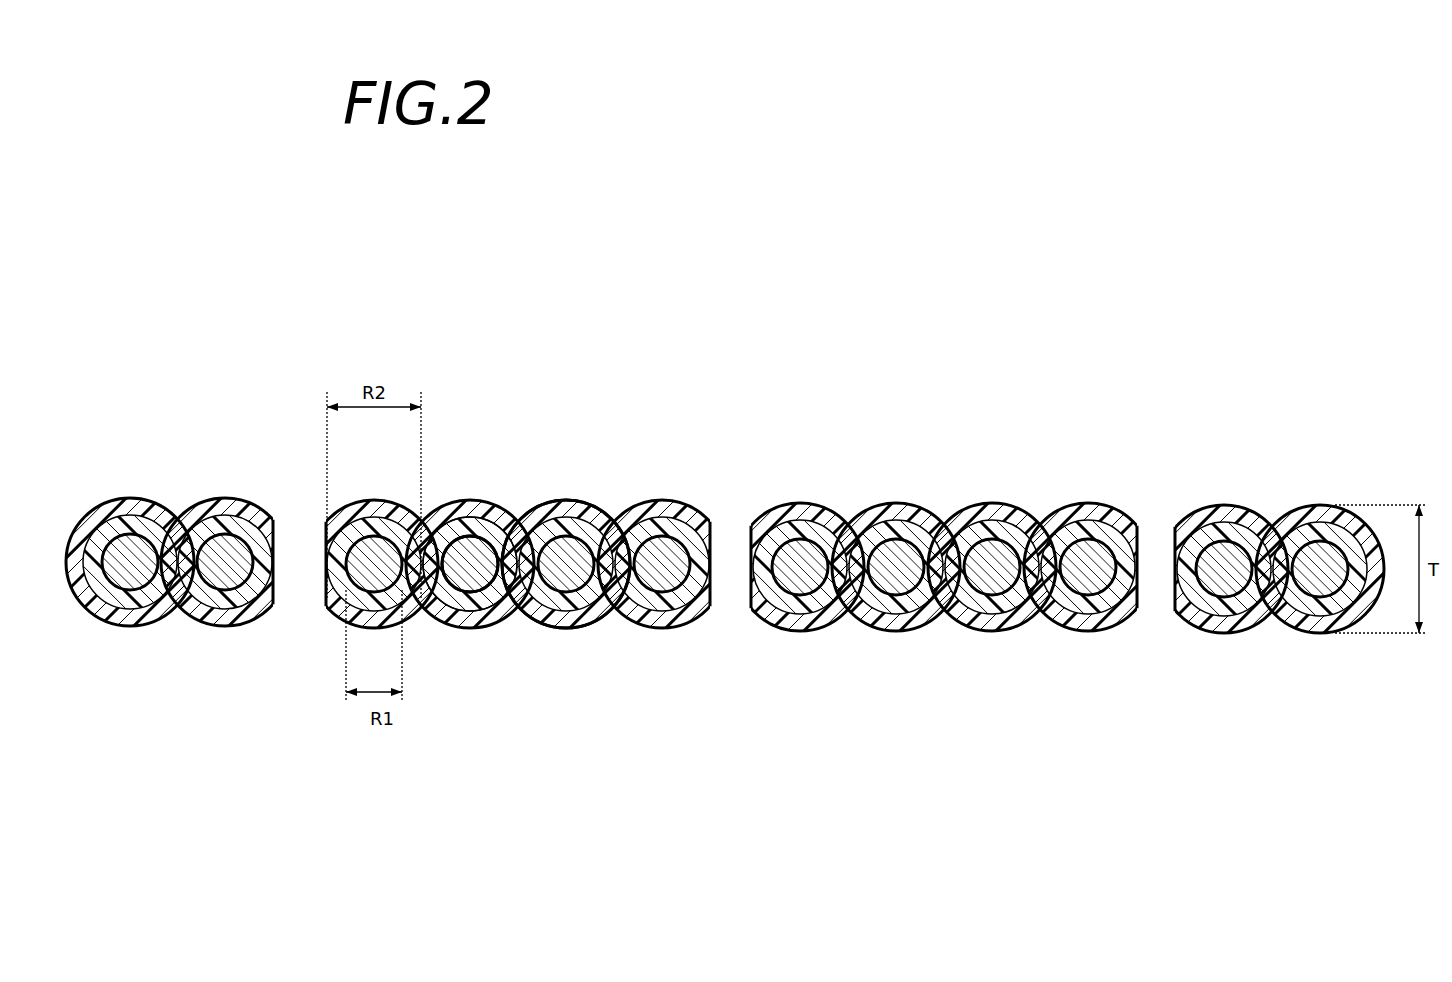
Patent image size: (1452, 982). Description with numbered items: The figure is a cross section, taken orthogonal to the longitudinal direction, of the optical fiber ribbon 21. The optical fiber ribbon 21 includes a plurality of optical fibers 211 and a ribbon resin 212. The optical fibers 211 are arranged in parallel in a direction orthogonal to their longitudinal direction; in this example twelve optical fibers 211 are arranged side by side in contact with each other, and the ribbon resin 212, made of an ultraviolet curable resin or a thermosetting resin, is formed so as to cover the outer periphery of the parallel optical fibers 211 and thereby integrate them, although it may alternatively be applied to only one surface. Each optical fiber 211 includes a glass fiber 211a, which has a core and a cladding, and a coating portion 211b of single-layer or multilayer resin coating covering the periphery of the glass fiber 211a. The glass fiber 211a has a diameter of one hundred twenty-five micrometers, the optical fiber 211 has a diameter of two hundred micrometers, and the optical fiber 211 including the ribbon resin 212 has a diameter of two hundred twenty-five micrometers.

The optical fiber ribbon 21 is at (827, 352).
The optical fiber 211 is at (132, 612).
The glass fiber 211a is at (467, 556).
The coating portion 211b is at (483, 528).
The ribbon resin 212 is at (558, 513).